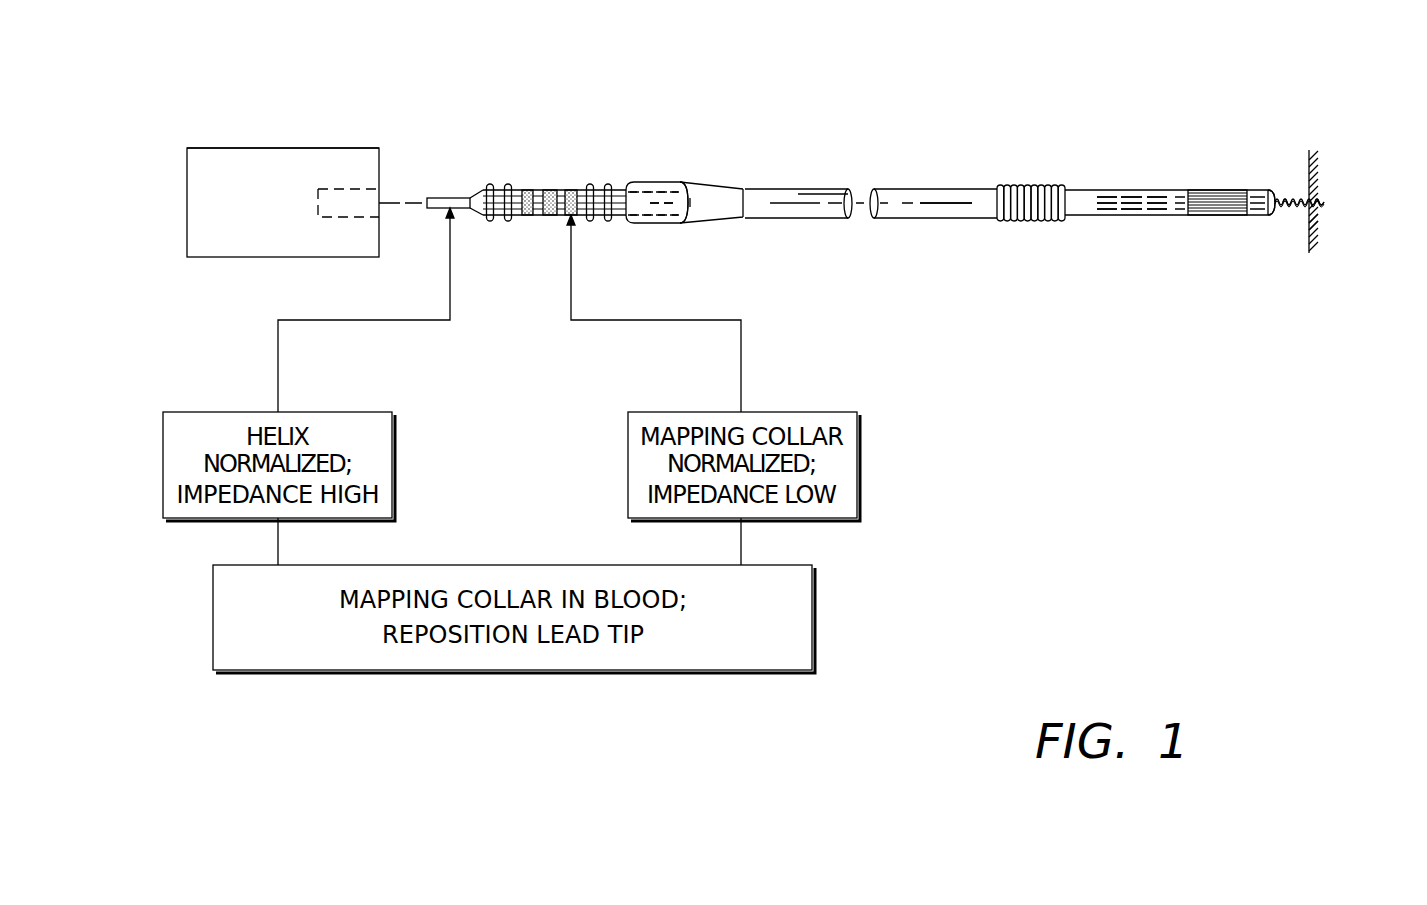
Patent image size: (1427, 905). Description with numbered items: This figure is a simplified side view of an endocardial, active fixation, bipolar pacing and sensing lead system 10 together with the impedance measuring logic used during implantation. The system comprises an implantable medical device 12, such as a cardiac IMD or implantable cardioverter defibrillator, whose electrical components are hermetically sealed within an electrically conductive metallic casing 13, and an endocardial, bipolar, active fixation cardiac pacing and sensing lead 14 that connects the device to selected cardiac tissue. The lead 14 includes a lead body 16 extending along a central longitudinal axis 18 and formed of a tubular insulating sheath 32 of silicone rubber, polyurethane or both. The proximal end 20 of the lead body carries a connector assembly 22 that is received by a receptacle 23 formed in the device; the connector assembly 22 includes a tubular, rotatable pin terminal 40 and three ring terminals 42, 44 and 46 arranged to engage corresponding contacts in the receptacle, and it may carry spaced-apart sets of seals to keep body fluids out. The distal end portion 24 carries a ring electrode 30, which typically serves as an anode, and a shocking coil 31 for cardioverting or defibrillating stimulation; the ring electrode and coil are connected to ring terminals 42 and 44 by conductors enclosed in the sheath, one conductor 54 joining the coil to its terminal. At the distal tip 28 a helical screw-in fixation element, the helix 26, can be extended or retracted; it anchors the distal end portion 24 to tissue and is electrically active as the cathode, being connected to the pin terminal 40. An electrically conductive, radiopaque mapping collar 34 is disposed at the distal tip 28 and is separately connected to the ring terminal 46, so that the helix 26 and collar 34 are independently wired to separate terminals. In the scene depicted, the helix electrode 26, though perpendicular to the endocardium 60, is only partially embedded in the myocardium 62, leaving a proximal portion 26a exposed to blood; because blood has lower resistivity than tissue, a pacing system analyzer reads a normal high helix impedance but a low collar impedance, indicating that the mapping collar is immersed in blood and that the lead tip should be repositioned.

The endocardial bipolar pacing/sensing lead system 10 is at (800, 62).
The implantable medical device 12 is at (222, 148).
The metallic casing 13 is at (280, 148).
The receptacle 23 is at (348, 190).
The cardiac pacing and sensing lead 14 is at (858, 131).
The lead body 16 is at (903, 188).
The central longitudinal axis 18 is at (802, 188).
The proximal end 20 is at (657, 186).
The connector assembly 22 is at (568, 131).
The distal end portion 24 is at (1087, 189).
The helix 26 is at (1322, 198).
The proximal portion of the helix 26a is at (1291, 208).
The distal tip 28 is at (1280, 188).
The ring electrode 30 is at (1200, 189).
The shocking coil 31 is at (1022, 184).
The tubular sheath 32 is at (957, 188).
The mapping collar 34 is at (1274, 188).
The pin terminal 40 is at (450, 197).
The ring terminal 42 is at (525, 189).
The ring terminal 44 is at (550, 189).
The ring terminal 46 is at (571, 189).
The electrical conductor 54 is at (678, 190).
The endocardium 60 is at (1312, 243).
The myocardium 62 is at (1333, 230).